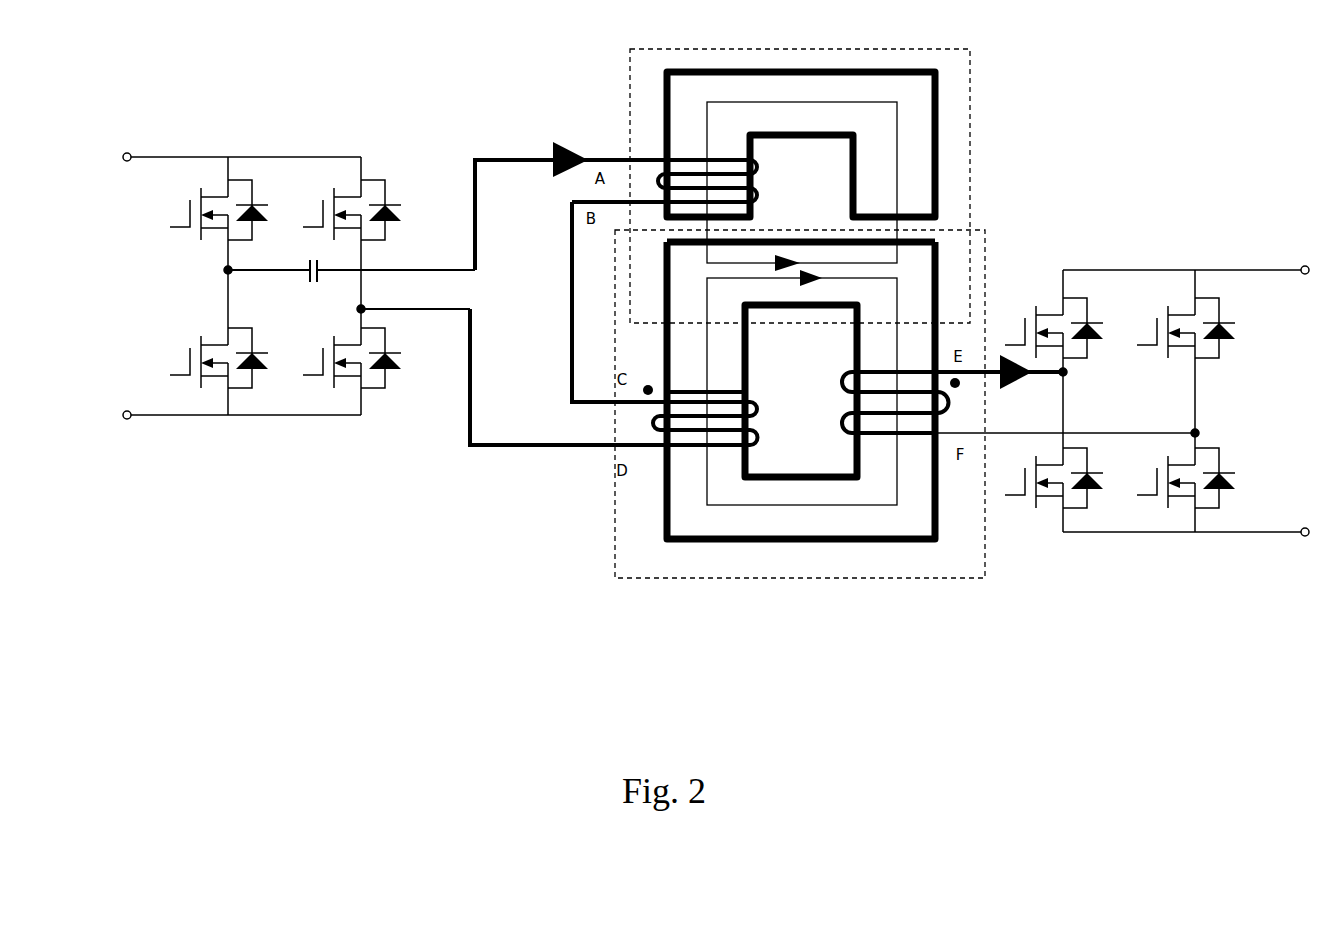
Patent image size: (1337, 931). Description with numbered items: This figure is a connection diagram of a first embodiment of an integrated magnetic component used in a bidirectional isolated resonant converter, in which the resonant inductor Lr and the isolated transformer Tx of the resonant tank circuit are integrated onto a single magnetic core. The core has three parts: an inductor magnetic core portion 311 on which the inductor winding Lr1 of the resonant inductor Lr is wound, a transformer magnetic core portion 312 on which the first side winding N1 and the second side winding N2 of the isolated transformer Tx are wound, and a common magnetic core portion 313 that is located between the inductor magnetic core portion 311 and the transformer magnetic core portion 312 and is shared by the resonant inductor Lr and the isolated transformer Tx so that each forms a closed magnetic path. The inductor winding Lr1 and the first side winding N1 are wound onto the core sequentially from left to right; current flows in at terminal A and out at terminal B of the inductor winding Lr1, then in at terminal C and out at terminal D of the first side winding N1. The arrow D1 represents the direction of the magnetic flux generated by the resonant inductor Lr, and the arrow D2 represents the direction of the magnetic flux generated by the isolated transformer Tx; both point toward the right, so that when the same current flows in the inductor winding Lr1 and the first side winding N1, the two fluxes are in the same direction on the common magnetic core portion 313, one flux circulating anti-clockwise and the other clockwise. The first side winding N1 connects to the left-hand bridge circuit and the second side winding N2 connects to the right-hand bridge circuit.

The inductor magnetic core portion 311 is at (712, 70).
The transformer magnetic core portion 312 is at (810, 523).
The common magnetic core portion 313 is at (913, 262).
The resonant inductor Lr is at (972, 116).
The inductor winding Lr1 is at (726, 181).
The isolated transformer Tx is at (677, 580).
The first side winding N1 is at (721, 418).
The second side winding N2 is at (938, 394).
The arrow D1 is at (802, 186).
The arrow D2 is at (802, 387).